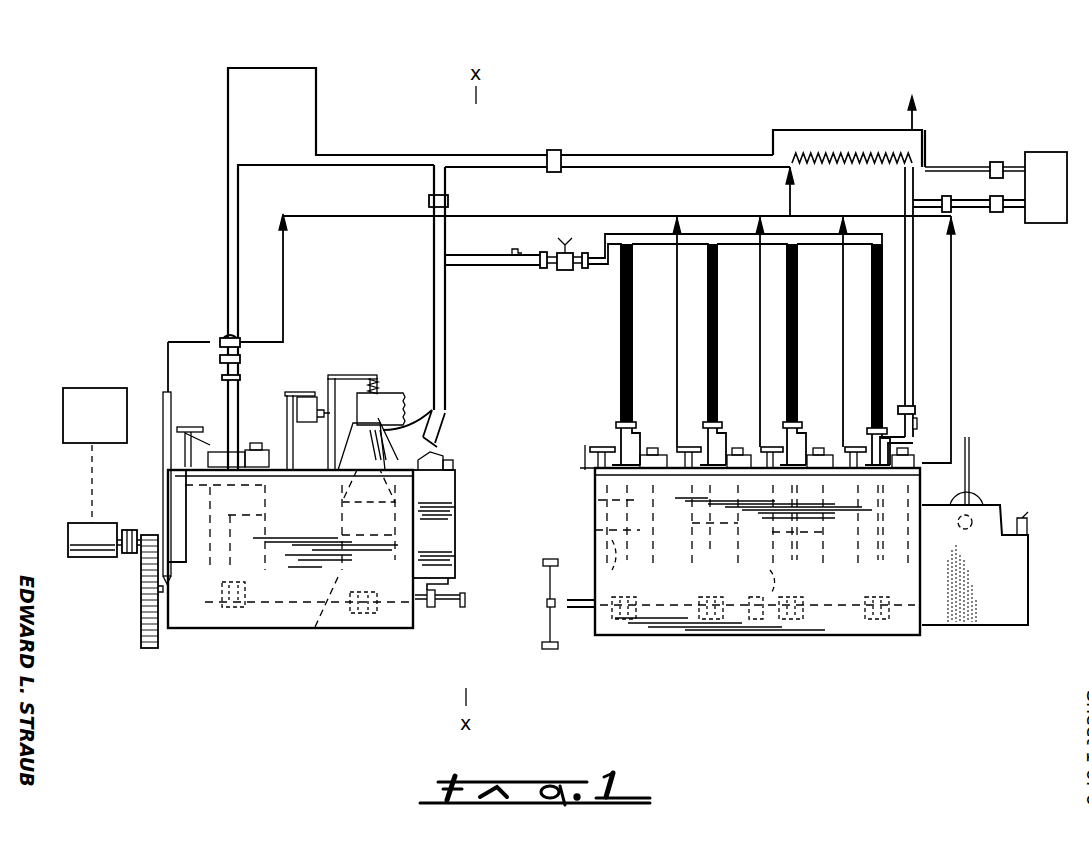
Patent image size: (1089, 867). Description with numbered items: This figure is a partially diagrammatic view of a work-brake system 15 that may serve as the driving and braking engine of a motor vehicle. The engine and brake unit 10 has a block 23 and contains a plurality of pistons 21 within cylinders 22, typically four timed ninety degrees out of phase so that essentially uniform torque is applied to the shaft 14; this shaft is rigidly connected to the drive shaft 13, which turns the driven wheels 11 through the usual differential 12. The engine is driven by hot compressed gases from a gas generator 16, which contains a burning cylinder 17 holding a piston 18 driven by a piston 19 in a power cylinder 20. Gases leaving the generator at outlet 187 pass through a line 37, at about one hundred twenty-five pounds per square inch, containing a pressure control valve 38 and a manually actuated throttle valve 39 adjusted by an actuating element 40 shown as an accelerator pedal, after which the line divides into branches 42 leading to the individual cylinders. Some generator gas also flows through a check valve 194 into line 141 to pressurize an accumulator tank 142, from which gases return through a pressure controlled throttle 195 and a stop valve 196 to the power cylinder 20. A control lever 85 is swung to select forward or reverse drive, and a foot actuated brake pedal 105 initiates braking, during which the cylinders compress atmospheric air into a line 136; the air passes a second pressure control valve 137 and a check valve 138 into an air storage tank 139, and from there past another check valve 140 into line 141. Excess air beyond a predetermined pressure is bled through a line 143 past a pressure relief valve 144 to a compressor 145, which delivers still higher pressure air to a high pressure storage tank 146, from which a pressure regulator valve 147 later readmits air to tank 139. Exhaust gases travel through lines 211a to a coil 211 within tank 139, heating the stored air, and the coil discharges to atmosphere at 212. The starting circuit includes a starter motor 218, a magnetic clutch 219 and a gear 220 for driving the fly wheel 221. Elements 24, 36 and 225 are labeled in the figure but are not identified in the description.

The engine and brake unit 10 is at (682, 638).
The driven wheels 11 is at (550, 650).
The differential 12 is at (547, 605).
The drive shaft 13 is at (548, 599).
The shaft 14 is at (580, 610).
The work-brake system 15 is at (812, 640).
The gas generator 16 is at (370, 632).
The burning cylinder 17 is at (318, 632).
The piston 18 is at (455, 500).
The piston 19 is at (183, 498).
The power cylinder 20 is at (205, 595).
The pistons 21 is at (712, 470).
The cylinders 22 is at (610, 548).
The block 23 is at (880, 640).
The tank wall 24 is at (595, 470).
The nozzle 36 is at (632, 640).
The line 37 is at (481, 250).
The pressure control valve 38 is at (512, 239).
The manually actuated throttle valve 39 is at (566, 272).
The actuating element 40 is at (573, 235).
The branches 42 is at (620, 333).
The control lever 85 is at (970, 470).
The foot actuated brake pedal 105 is at (1025, 512).
The line 136 is at (905, 440).
The second pressure control valve 137 is at (920, 424).
The check valve 138 is at (916, 410).
The air storage tank 139 is at (925, 148).
The check valve 140 is at (561, 152).
The line 141 is at (418, 148).
The accumulator tank 142 is at (322, 148).
The line 143 is at (913, 205).
The pressure relief valve 144 is at (950, 212).
The compressor 145 is at (1000, 212).
The high pressure storage tank 146 is at (1060, 199).
The pressure regulator valve 147 is at (1000, 162).
The outlet 187 is at (443, 413).
The check valve 194 is at (448, 202).
The pressure controlled throttle 195 is at (205, 387).
The stop valve 196 is at (222, 380).
The coil 211 is at (868, 128).
The lines 211a is at (285, 322).
The discharge 212 is at (916, 116).
The starter motor 218 is at (68, 542).
The magnetic clutch 219 is at (128, 556).
The gear 220 is at (150, 520).
The fly wheel 221 is at (141, 640).
The valve 225 is at (540, 268).